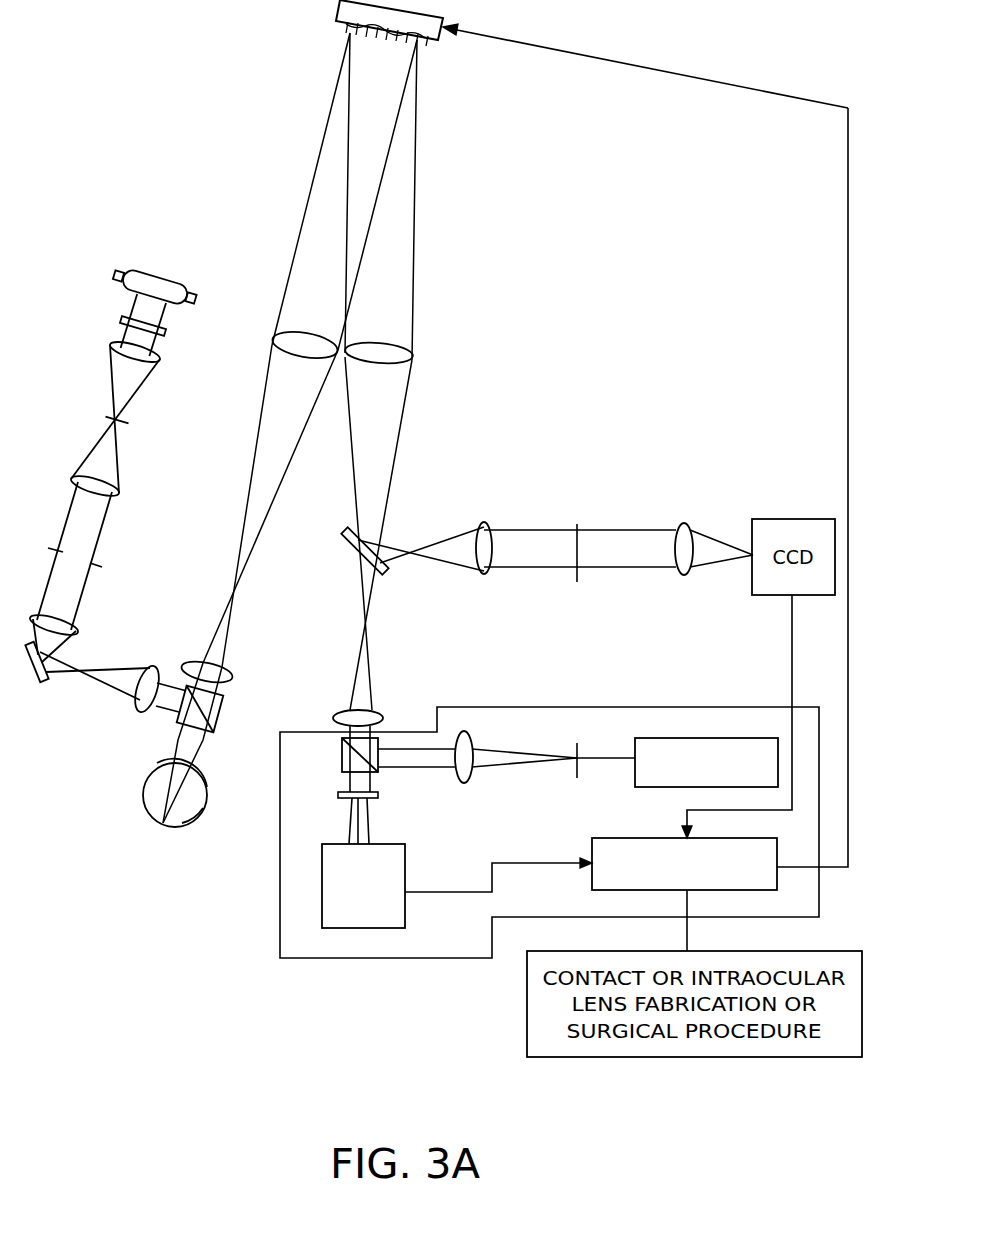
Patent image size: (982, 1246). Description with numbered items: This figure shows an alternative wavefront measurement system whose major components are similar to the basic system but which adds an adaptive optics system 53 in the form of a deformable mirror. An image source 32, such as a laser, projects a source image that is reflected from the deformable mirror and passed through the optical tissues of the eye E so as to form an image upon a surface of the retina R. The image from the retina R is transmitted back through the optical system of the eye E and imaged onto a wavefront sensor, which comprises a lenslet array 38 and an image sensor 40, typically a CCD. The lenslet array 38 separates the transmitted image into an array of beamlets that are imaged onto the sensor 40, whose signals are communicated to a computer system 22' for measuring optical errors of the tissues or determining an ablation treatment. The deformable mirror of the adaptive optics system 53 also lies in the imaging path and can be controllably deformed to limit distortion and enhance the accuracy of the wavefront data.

The adaptive optics system 53 is at (337, 24).
The image source 32 is at (712, 738).
The lenslet array 38 is at (378, 795).
The image sensor 40 is at (390, 843).
The computer system 22' is at (752, 870).
The eye E is at (126, 810).
The retina R is at (203, 810).